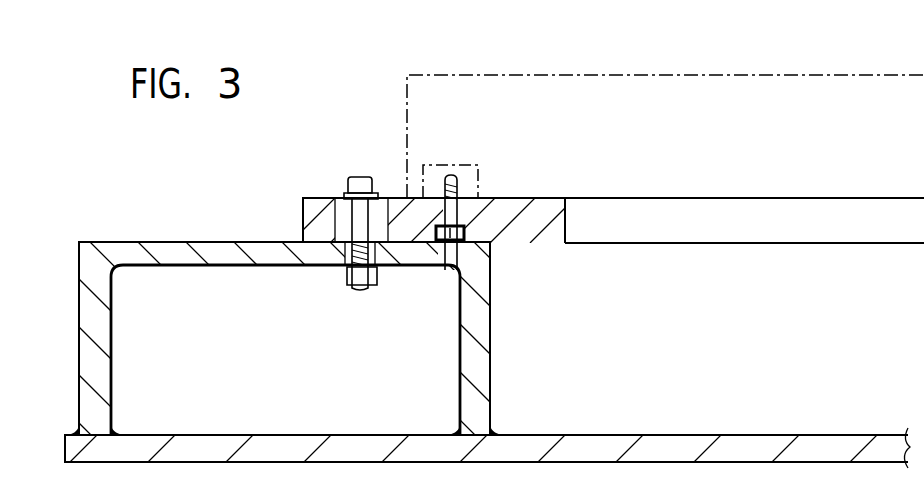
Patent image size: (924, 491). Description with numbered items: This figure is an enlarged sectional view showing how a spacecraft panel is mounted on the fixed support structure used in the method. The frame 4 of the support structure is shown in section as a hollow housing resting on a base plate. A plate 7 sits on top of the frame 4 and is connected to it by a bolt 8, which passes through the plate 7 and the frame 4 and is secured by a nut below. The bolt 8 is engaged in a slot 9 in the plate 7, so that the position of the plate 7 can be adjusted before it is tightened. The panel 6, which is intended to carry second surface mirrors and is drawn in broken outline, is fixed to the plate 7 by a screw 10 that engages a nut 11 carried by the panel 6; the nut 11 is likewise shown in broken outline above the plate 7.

The frame 4 is at (475, 352).
The panel 6 is at (443, 73).
The plate 7 is at (528, 220).
The bolt 8 is at (340, 245).
The slot 9 is at (388, 228).
The screw 10 is at (437, 222).
The nut 11 is at (467, 177).